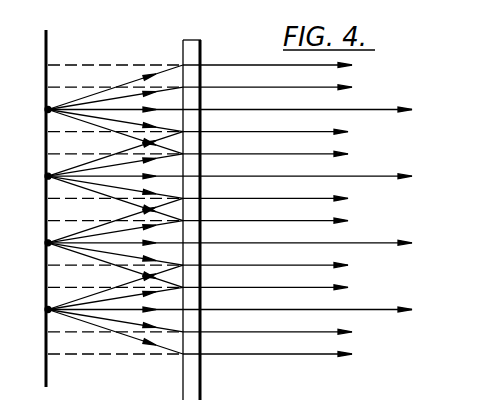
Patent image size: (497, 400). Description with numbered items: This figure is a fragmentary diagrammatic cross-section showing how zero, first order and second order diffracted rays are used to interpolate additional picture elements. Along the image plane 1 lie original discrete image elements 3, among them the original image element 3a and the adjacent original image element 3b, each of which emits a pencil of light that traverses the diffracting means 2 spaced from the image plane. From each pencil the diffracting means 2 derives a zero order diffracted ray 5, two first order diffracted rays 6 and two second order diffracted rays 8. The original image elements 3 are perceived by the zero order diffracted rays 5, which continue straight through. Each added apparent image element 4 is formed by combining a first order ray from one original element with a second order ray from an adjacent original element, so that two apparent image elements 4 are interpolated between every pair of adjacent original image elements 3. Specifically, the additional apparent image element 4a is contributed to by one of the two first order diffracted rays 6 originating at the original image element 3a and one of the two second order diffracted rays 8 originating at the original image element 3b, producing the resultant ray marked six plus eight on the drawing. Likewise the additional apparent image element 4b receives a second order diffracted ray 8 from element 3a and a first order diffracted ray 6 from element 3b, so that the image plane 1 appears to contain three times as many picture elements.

The image plane 1 is at (46, 33).
The diffracting means 2 is at (183, 40).
The original image element 3 is at (105, 276).
The original image element 3a is at (100, 109).
The original image element 3b is at (100, 176).
The apparent image element 4 is at (105, 209).
The additional apparent image element 4a is at (100, 132).
The additional apparent image element 4b is at (100, 154).
The zero order diffracted ray 5 is at (297, 200).
The first order diffracted ray 6 is at (230, 186).
The second order diffracted ray 8 is at (211, 197).